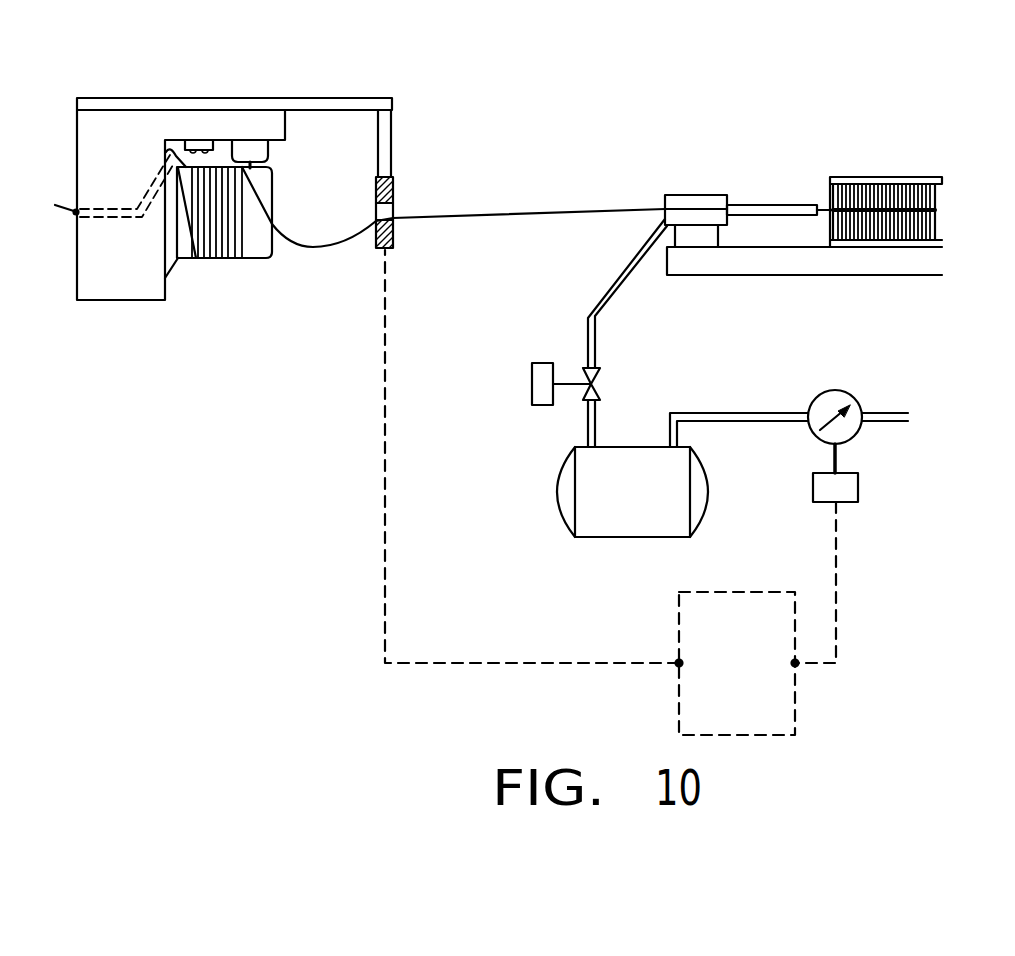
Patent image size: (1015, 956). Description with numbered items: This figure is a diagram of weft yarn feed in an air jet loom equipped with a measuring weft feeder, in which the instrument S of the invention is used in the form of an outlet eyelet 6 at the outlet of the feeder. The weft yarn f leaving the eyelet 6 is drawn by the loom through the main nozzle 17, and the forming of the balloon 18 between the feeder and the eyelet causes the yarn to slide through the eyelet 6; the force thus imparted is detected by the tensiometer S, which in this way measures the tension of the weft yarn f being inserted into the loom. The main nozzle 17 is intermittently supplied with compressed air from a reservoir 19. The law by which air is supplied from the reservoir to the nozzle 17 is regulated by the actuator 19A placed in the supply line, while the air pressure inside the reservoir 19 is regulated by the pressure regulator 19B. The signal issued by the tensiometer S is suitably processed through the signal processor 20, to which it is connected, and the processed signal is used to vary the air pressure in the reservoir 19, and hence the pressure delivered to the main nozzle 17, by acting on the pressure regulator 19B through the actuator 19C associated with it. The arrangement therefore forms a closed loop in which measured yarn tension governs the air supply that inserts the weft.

The instrument (tensiometer) S is at (395, 192).
The outlet eyelet 6 is at (390, 211).
The weft yarn f is at (546, 213).
The main nozzle 17 is at (713, 200).
The balloon 18 is at (327, 250).
The reservoir 19 is at (595, 517).
The actuator 19A is at (541, 376).
The pressure regulator 19B is at (823, 410).
The actuator 19C is at (843, 490).
The signal processor 20 is at (793, 723).